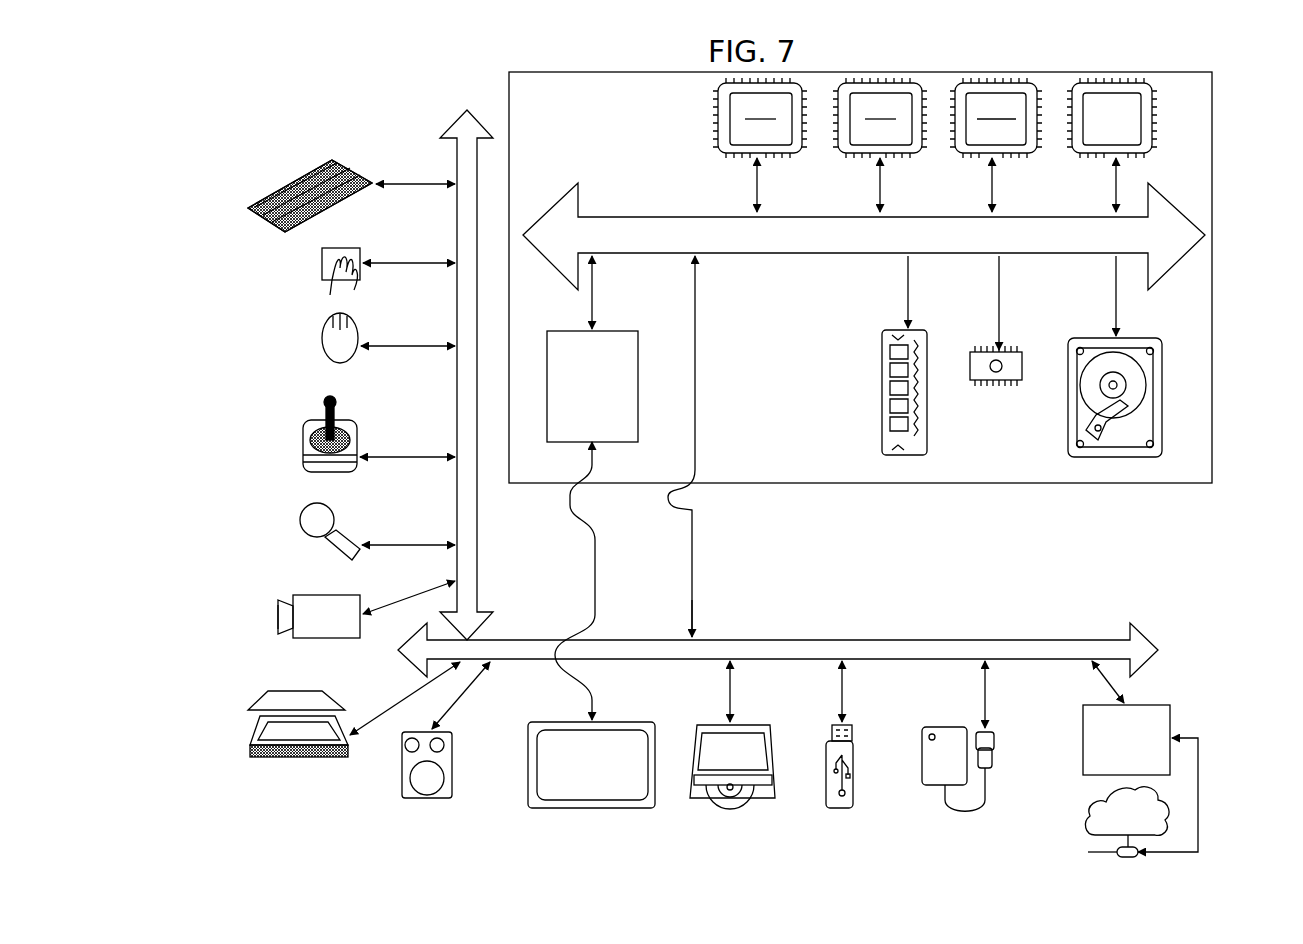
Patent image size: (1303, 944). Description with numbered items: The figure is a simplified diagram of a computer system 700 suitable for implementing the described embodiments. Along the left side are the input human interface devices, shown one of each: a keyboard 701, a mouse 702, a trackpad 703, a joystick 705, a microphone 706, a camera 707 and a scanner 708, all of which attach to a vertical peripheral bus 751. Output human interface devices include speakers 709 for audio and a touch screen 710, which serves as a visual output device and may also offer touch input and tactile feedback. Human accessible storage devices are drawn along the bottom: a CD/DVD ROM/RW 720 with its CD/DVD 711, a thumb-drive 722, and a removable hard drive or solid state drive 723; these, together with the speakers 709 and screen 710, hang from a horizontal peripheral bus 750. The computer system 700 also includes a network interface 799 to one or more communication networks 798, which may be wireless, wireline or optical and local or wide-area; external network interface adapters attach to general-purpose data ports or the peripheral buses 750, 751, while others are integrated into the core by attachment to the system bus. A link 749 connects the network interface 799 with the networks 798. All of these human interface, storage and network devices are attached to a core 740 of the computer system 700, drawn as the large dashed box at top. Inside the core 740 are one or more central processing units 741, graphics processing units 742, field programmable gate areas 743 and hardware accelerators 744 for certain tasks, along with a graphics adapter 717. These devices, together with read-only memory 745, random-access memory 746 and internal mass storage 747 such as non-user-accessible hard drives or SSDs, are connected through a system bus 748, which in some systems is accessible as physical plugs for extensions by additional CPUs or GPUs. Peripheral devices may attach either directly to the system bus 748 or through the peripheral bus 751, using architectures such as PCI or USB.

The computer system 700 is at (208, 108).
The keyboard 701 is at (247, 207).
The mouse 702 is at (318, 342).
The trackpad 703 is at (318, 275).
The joystick 705 is at (303, 455).
The microphone 706 is at (302, 524).
The camera 707 is at (280, 614).
The scanner 708 is at (250, 745).
The speakers 709 is at (425, 798).
The touch screen 710 is at (592, 808).
The CD/DVD 711 is at (722, 800).
The graphics adapter 717 is at (640, 418).
The CD/DVD ROM/RW 720 is at (764, 798).
The thumb-drive 722 is at (838, 808).
The removable hard drive or solid state drive 723 is at (922, 785).
The core 740 is at (850, 483).
The Central Processing Unit (CPU) 741 is at (729, 155).
The Graphics Processing Unit (GPU) 742 is at (849, 155).
The Field Programmable Gate Area (FPGA) 743 is at (964, 155).
The hardware accelerators 744 is at (1081, 155).
The Read-only memory (ROM) 745 is at (990, 387).
The Random-access memory 746 is at (882, 385).
The internal mass storage 747 is at (1085, 337).
The system bus 748 is at (838, 253).
The network connection 749 is at (1200, 755).
The peripheral bus 750 is at (990, 640).
The peripheral bus 751 is at (440, 138).
The communication networks 798 is at (1088, 815).
The network interface 799 is at (1083, 707).